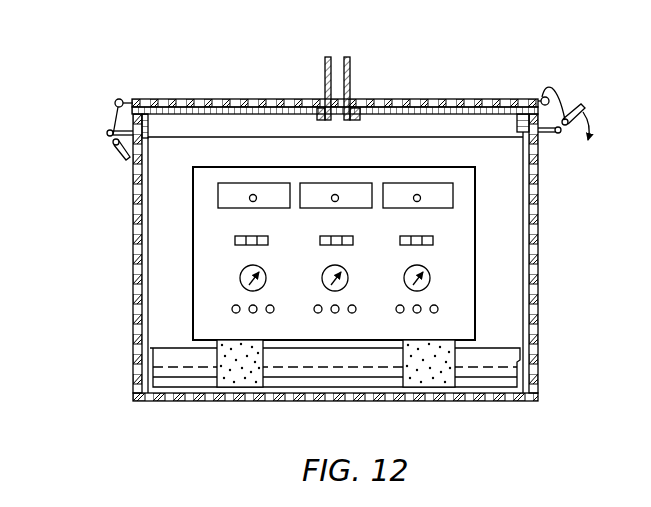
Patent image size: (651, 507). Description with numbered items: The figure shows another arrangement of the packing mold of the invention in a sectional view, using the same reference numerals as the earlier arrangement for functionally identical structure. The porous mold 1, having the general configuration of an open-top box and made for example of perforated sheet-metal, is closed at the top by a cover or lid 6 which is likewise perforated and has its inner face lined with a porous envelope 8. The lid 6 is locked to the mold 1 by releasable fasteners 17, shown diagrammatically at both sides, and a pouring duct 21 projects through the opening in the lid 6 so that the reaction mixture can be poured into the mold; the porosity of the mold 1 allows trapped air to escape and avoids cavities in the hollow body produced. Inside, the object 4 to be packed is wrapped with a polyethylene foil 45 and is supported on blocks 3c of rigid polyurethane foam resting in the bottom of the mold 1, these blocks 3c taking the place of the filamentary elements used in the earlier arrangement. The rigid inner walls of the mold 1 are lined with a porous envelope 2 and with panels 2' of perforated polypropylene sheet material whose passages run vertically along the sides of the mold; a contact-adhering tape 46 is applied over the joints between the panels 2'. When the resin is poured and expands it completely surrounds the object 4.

The porous mold 1 is at (537, 313).
The porous envelope 2 is at (335, 278).
The panels of sheet material 2' is at (555, 265).
The blocks of rigid polyurethane foam 3c is at (240, 380).
The object to be packed 4 is at (207, 233).
The cover or lid 6 is at (391, 96).
The porous envelope 8 is at (423, 110).
The releasable fasteners 17 is at (115, 150).
The pouring duct 21 is at (325, 70).
The polyethylene foil 45 is at (477, 268).
The contact-adhering tape 46 is at (153, 368).